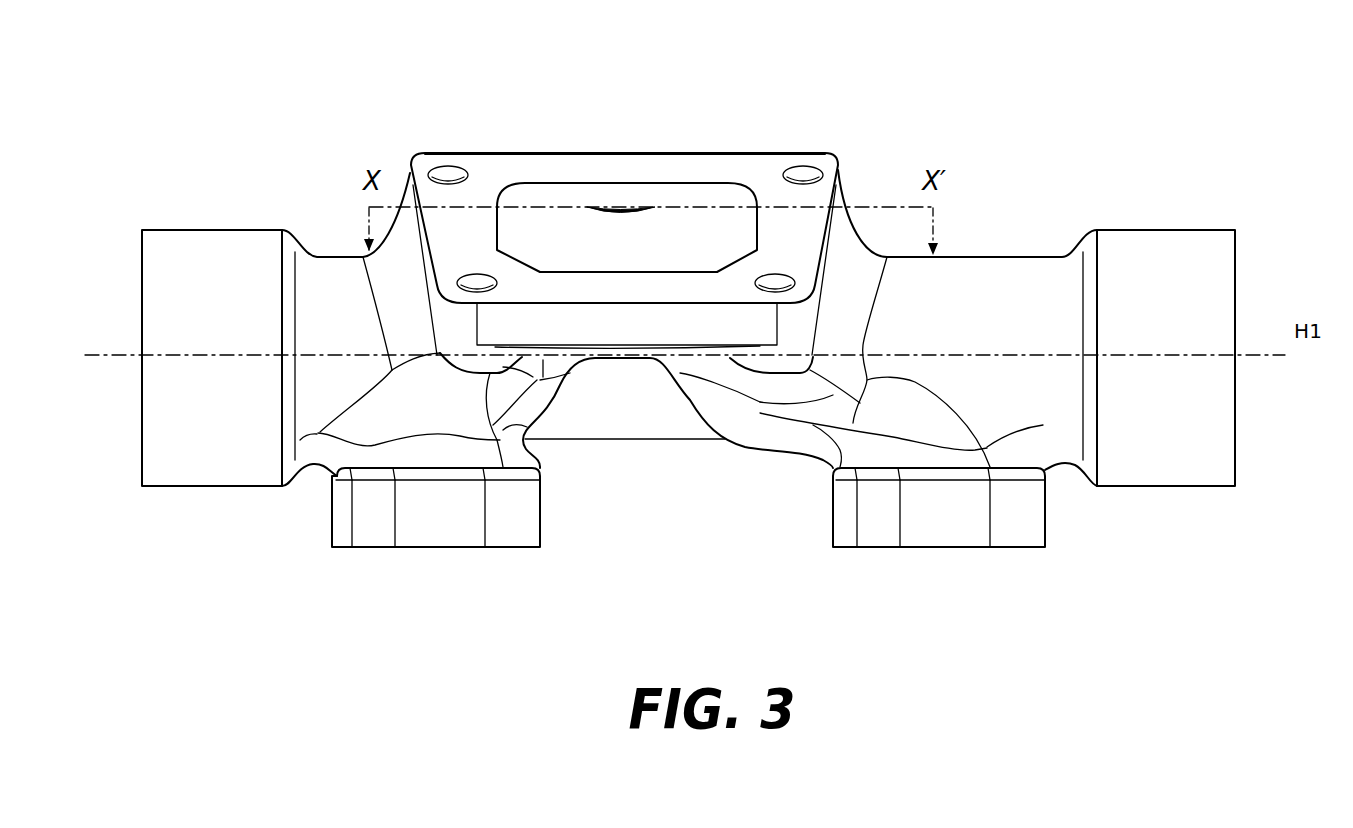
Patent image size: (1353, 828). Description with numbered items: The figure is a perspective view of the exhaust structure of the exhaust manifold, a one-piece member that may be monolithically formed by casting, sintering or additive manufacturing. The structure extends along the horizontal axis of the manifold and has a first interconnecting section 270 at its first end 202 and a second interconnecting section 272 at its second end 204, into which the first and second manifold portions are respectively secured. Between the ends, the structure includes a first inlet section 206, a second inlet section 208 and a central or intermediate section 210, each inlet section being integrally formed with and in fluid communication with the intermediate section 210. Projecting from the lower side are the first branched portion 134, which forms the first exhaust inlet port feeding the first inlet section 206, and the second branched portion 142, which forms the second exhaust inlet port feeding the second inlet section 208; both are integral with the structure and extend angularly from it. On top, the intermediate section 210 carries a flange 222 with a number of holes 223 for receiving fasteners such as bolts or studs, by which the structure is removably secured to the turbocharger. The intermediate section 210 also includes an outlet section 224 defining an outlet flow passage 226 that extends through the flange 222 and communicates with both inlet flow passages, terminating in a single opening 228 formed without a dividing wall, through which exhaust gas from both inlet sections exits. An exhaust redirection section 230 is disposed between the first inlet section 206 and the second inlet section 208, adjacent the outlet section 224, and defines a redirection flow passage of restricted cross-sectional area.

The first branched portion 134 is at (440, 520).
The second branched portion 142 is at (944, 520).
The first end 202 is at (210, 213).
The second end 204 is at (1165, 213).
The first inlet section 206 is at (337, 233).
The second inlet section 208 is at (977, 233).
The intermediate section 210 is at (715, 142).
The flange 222 is at (503, 168).
The holes 223 is at (487, 275).
The outlet section 224 is at (647, 218).
The outlet flow passage 226 is at (548, 233).
The opening 228 is at (572, 200).
The exhaust redirection section 230 is at (620, 240).
The first interconnecting section 270 is at (222, 513).
The second interconnecting section 272 is at (1172, 513).